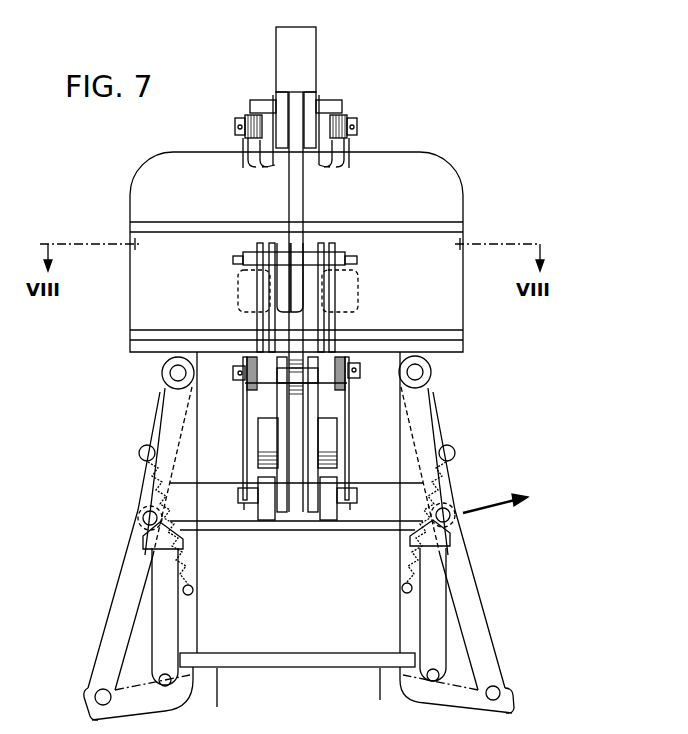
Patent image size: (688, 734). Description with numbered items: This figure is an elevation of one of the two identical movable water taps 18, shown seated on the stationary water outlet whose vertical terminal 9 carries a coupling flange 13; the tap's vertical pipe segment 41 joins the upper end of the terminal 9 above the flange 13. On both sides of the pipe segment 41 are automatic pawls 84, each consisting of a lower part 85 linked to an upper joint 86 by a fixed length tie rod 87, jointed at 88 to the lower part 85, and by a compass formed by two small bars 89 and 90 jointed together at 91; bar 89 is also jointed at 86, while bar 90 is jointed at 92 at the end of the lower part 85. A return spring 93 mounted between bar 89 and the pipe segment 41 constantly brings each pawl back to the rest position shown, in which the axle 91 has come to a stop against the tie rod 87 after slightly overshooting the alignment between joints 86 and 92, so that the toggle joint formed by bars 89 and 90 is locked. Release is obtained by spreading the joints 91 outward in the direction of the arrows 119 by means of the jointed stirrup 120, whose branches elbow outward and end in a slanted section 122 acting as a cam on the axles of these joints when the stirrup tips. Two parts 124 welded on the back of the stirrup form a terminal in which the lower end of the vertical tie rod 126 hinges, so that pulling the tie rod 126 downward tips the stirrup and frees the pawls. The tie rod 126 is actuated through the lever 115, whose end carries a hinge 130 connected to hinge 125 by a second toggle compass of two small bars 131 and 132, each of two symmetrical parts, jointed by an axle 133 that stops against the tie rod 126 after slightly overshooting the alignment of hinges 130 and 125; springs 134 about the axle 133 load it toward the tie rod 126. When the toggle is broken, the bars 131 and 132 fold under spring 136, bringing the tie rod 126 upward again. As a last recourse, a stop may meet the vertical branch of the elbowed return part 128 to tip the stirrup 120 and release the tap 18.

The vertical terminal 9 is at (243, 692).
The coupling flange 13 is at (319, 660).
The water tap 18 is at (446, 147).
The vertical pipe segment 41 is at (220, 622).
The automatic pawl 84 is at (110, 604).
The lower part 85 is at (412, 676).
The upper joint 86 is at (424, 372).
The fixed length tie rod 87 is at (432, 652).
The joint 88 is at (434, 682).
The small bar 89 is at (436, 426).
The small bar 90 is at (462, 587).
The joint axle 91 is at (449, 511).
The joint 92 is at (501, 694).
The return spring 93 is at (145, 471).
The lever 115 is at (282, 291).
The arrow 119 is at (499, 518).
The jointed stirrup 120 is at (382, 496).
The slanted section 122 is at (147, 536).
The terminal part 124 is at (327, 506).
The hinge 125 is at (349, 503).
The vertical tie rod 126 is at (296, 199).
The elbowed return part 128 is at (310, 100).
The hinge 130 is at (349, 259).
The small bar 131 is at (262, 324).
The small bar 132 is at (313, 399).
The axle 133 is at (360, 370).
The spring 134 is at (245, 405).
The spring 136 is at (350, 157).